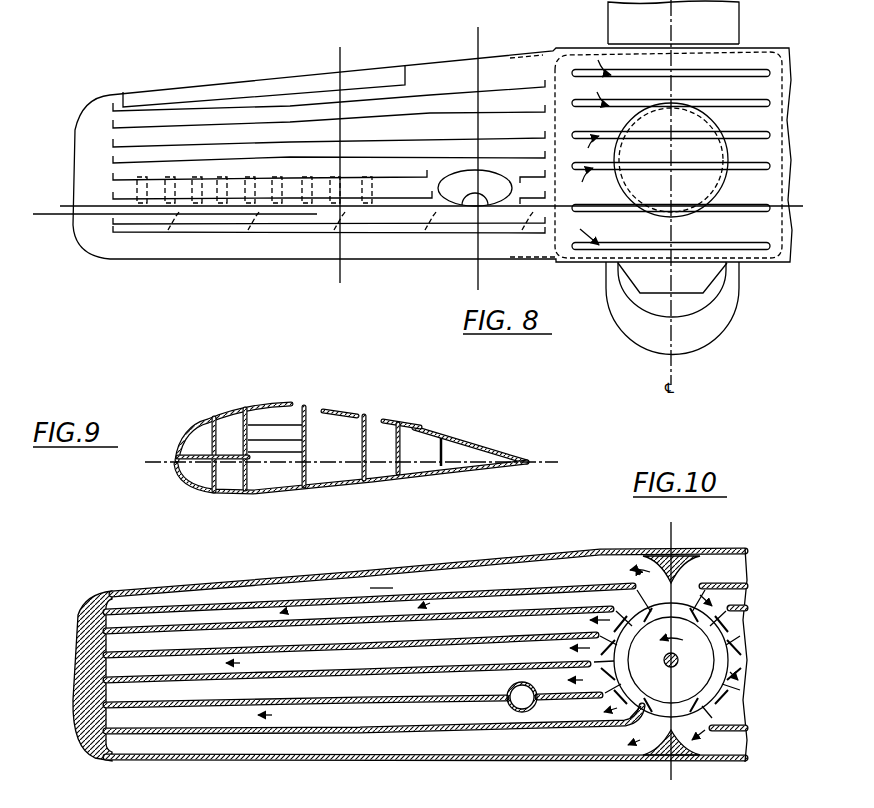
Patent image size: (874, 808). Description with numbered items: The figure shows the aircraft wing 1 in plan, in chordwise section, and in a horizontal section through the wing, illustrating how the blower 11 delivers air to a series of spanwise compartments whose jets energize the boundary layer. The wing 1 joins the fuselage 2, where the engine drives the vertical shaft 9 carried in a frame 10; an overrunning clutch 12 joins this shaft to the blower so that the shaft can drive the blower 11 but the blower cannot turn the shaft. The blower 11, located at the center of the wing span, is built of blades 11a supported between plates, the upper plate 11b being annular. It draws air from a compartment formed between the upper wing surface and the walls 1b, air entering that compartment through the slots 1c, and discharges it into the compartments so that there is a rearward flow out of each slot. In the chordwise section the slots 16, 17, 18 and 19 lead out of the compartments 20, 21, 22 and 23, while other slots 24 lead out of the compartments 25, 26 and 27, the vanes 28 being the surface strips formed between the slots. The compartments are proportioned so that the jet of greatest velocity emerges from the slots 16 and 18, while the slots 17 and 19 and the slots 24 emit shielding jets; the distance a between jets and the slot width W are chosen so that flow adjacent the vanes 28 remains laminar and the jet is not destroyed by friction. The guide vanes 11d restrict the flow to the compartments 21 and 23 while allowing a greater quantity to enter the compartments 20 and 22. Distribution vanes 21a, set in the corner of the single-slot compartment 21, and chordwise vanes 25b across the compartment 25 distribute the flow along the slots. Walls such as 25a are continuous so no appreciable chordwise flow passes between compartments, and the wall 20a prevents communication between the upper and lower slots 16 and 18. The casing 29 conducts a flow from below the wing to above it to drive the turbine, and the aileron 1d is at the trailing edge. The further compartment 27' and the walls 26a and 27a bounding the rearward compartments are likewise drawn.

In FIG. 8, the wing 1 is at (160, 259).
In FIG. 9, the wing 1 is at (488, 450).
In FIG. 10, the wing 1 is at (128, 759).
In FIG. 8, the walls 1b is at (580, 92).
In FIG. 8, the slots 1c is at (745, 73).
In FIG. 8, the aileron 1d is at (263, 87).
In FIG. 8, the fuselage 2 is at (617, 31).
In FIG. 8, the vertical shaft 9 is at (340, 47).
In FIG. 10, the vertical shaft 9 is at (675, 664).
In FIG. 9, the frame 10 is at (145, 462).
In FIG. 8, the blower 11 is at (60, 206).
In FIG. 10, the blower 11 is at (687, 640).
In FIG. 8, the blades 11a is at (33, 214).
In FIG. 10, the blades 11a is at (624, 656).
In FIG. 10, the upper plate 11b is at (720, 647).
In FIG. 10, the guide vanes 11d is at (645, 728).
In FIG. 8, the overrunning clutch 12 is at (478, 27).
In FIG. 8, the slot 16 is at (128, 230).
In FIG. 9, the slot 16 is at (213, 418).
In FIG. 8, the slot 17 is at (148, 226).
In FIG. 9, the slot 17 is at (244, 418).
In FIG. 9, the slot 18 is at (215, 493).
In FIG. 9, the slot 19 is at (224, 491).
In FIG. 9, the compartment 20 is at (194, 447).
In FIG. 9, the wall 20a is at (193, 456).
In FIG. 9, the compartment 21 is at (230, 449).
In FIG. 8, the distribution vanes 21a is at (178, 214).
In FIG. 9, the distribution vanes 21a is at (212, 420).
In FIG. 9, the compartment 22 is at (195, 476).
In FIG. 10, the compartment 22 is at (374, 731).
In FIG. 9, the compartment 23 is at (229, 476).
In FIG. 10, the compartment 23 is at (353, 709).
In FIG. 8, the slots 24 is at (218, 108).
In FIG. 9, the slots 24 is at (272, 408).
In FIG. 9, the compartment 25 is at (275, 455).
In FIG. 10, the compartment 25 is at (347, 680).
In FIG. 9, the wall 25a is at (258, 489).
In FIG. 10, the wall 25a is at (220, 702).
In FIG. 8, the distribution vanes 25b is at (135, 187).
In FIG. 9, the distribution vanes 25b is at (260, 432).
In FIG. 9, the compartment 26 is at (329, 455).
In FIG. 10, the compartment 26 is at (351, 652).
In FIG. 9, the channel wall 26a is at (307, 470).
In FIG. 10, the channel wall 26a is at (193, 677).
In FIG. 9, the compartment 27 is at (382, 455).
In FIG. 10, the compartment 27 is at (358, 624).
In FIG. 9, the channel 27' is at (424, 452).
In FIG. 10, the channel 27' is at (369, 580).
In FIG. 9, the channel wall 27a is at (368, 465).
In FIG. 10, the channel wall 27a is at (252, 647).
In FIG. 9, the vanes 28 is at (293, 432).
In FIG. 8, the casing 29 is at (440, 188).
In FIG. 10, the casing 29 is at (507, 705).
In FIG. 9, the space between jets a is at (348, 390).
In FIG. 9, the slot width W is at (462, 449).